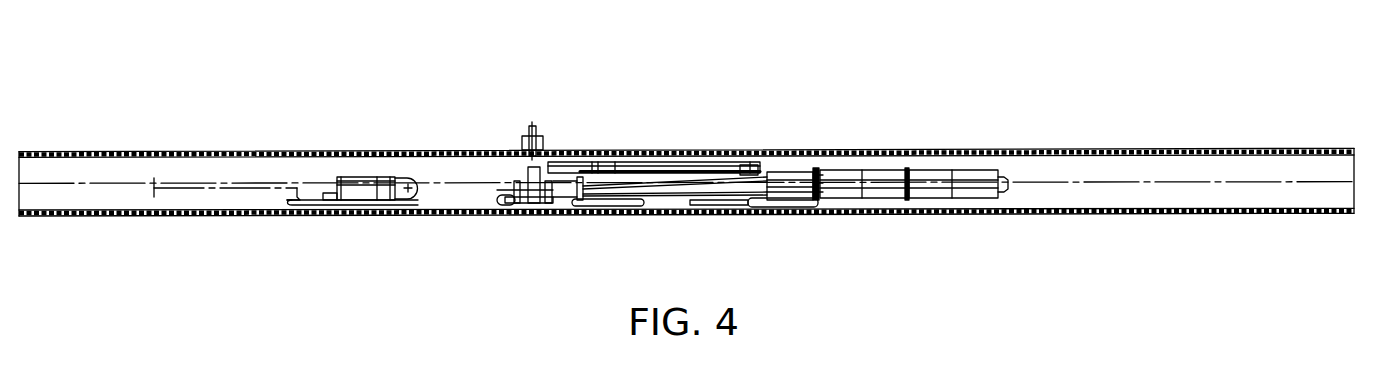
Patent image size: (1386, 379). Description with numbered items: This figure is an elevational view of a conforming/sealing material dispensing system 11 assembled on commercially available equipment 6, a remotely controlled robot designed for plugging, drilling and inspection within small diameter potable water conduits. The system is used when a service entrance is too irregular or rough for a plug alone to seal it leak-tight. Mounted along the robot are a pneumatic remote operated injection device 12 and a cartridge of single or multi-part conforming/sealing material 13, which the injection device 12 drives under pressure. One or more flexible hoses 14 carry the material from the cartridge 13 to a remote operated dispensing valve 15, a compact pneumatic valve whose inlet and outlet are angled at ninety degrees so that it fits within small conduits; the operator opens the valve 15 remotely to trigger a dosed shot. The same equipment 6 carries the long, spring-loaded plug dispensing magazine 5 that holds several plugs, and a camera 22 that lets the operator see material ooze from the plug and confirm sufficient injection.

The conforming/sealing material dispensing system 11 is at (788, 84).
The camera 22 is at (357, 177).
The remote operated dispensing valve 15 is at (510, 182).
The plug dispensing magazine 5 is at (633, 165).
The flexible hoses 14 is at (687, 212).
The commercially available equipment 6 is at (777, 183).
The cartridge of conforming/sealing material 13 is at (845, 193).
The pneumatic remote operated injection device 12 is at (930, 170).